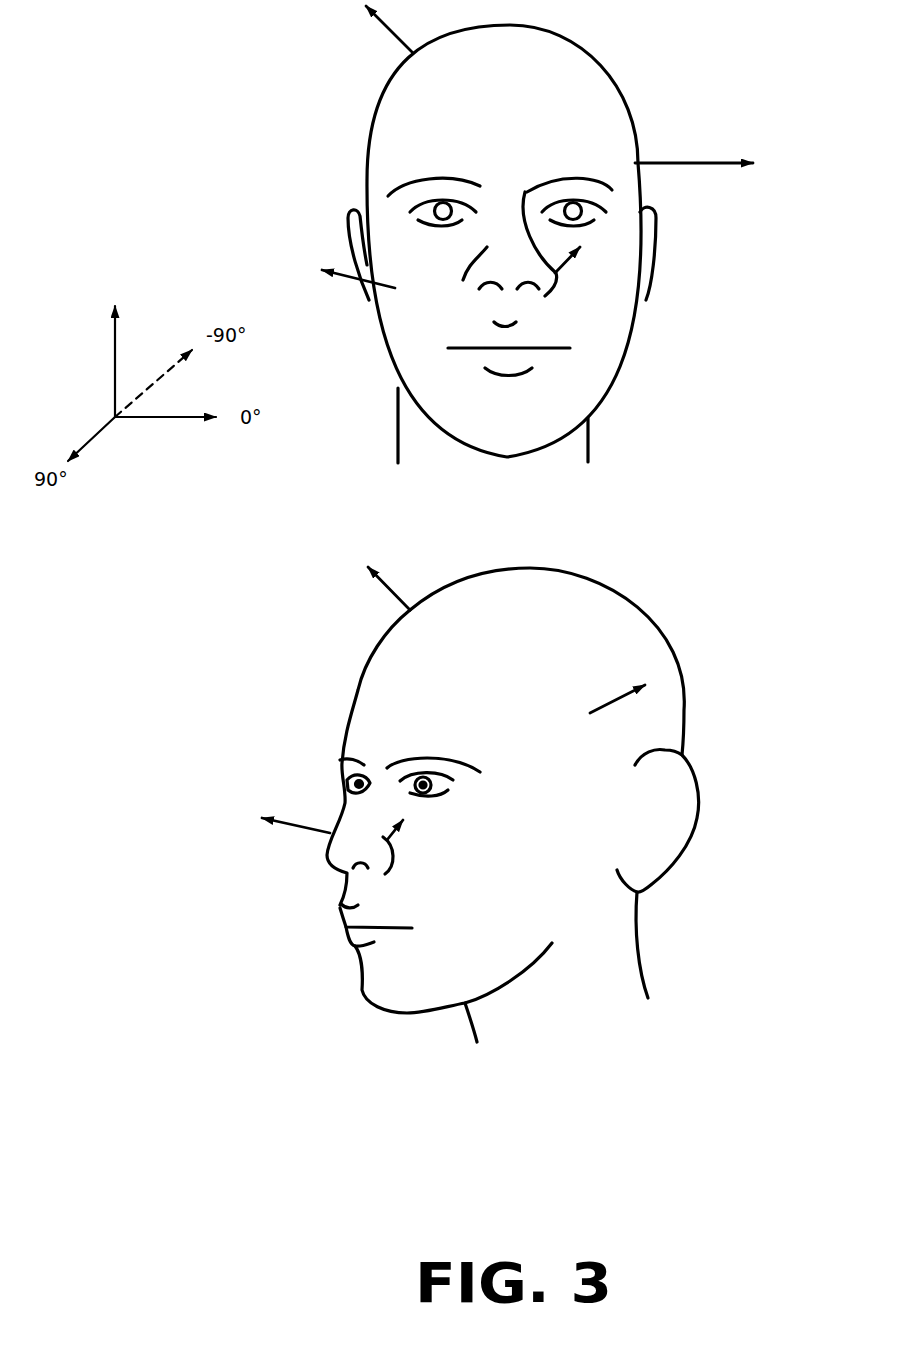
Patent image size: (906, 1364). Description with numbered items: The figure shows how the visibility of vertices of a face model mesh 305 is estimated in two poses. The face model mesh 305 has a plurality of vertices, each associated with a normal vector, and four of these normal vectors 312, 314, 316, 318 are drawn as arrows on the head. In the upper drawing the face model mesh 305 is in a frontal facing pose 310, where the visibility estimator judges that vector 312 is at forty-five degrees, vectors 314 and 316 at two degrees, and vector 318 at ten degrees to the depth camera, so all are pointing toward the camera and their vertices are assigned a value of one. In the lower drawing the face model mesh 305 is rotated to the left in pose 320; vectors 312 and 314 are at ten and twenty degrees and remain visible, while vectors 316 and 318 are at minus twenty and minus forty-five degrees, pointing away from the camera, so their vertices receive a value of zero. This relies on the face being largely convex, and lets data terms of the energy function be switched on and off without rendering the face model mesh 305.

The face model mesh 305 is at (646, 365).
The frontal facing pose 310 is at (373, 426).
The normal vector 312 is at (566, 268).
The normal vector 314 is at (712, 168).
The normal vector 316 is at (380, 33).
The normal vector 318 is at (364, 293).
The pose 320 is at (360, 987).